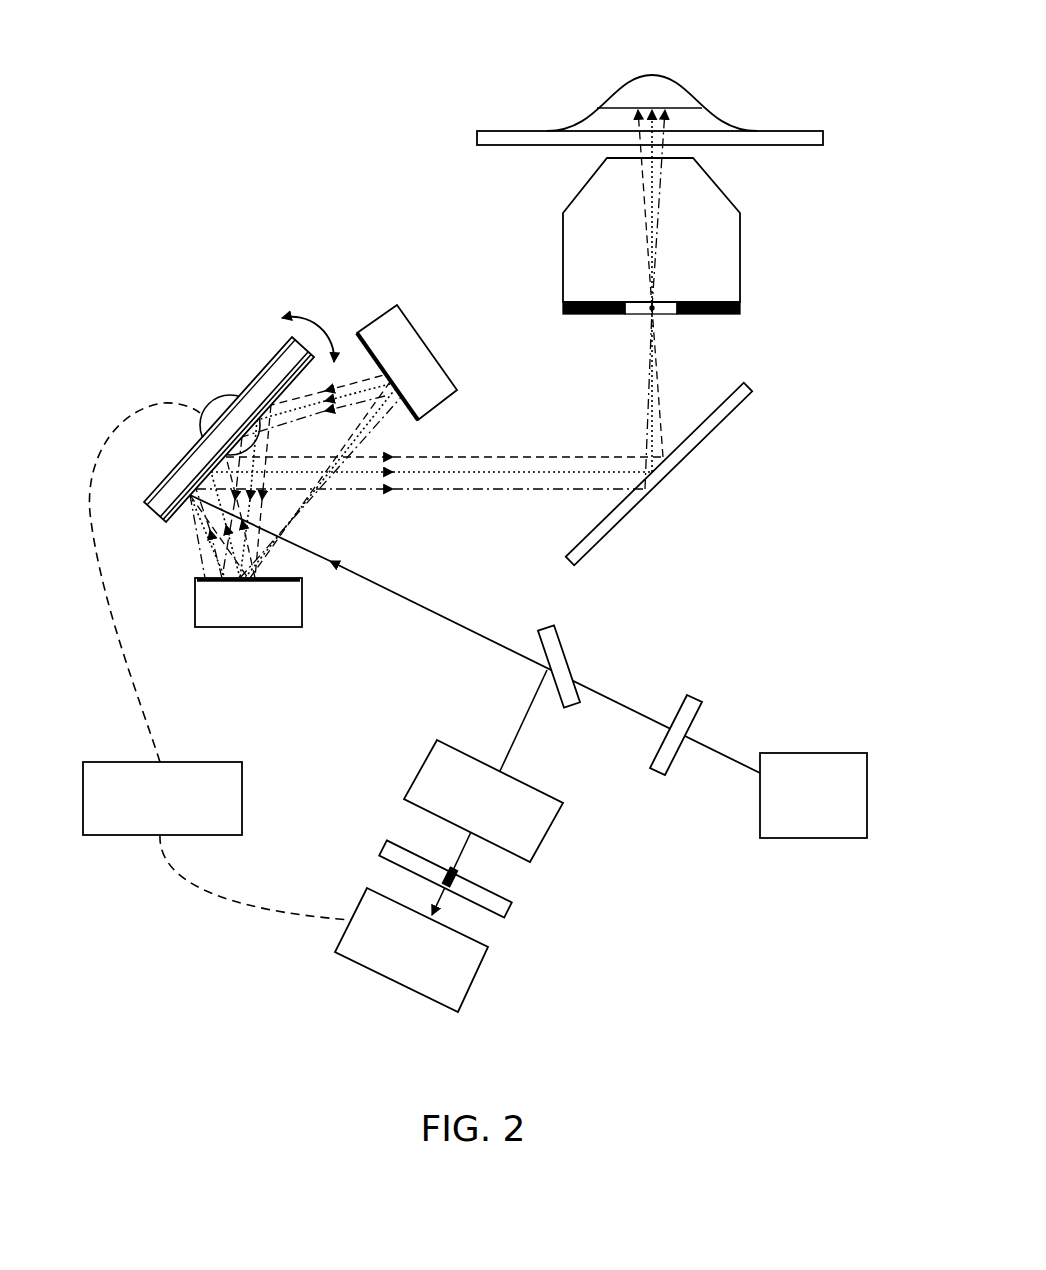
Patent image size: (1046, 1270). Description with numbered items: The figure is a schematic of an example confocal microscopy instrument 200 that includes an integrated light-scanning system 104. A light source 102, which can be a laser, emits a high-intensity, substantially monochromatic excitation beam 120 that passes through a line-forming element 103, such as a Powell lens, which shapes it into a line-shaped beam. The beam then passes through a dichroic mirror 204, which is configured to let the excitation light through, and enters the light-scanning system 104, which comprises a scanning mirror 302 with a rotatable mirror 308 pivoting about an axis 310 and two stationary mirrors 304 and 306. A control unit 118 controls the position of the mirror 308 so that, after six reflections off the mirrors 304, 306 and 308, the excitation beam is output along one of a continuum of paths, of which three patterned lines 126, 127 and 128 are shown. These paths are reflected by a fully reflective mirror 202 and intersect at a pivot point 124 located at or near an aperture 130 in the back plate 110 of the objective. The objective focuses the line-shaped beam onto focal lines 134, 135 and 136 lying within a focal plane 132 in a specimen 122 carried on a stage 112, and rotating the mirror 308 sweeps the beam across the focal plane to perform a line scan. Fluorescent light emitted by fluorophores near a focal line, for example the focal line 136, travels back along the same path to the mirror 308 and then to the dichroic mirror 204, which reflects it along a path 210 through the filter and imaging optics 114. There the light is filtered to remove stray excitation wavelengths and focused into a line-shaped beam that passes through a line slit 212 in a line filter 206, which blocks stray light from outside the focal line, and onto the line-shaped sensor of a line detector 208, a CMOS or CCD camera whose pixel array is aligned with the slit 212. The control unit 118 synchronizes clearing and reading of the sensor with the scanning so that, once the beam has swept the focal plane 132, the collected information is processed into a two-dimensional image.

The confocal microscopy instrument 200 is at (215, 122).
The light-scanning system 104 is at (131, 277).
The scanning mirror 302 is at (239, 397).
The mirror 308 is at (270, 359).
The pivot / rotation axis 310 is at (199, 427).
The stationary mirror 304 is at (440, 405).
The stationary mirror 306 is at (202, 603).
The excitation beam 120 is at (358, 578).
The excitation beam path 126 is at (423, 492).
The excitation beam path 127 is at (532, 470).
The excitation beam path 128 is at (600, 457).
The fully reflective mirror 202 is at (688, 455).
The aperture 130 is at (640, 314).
The pivot point 124 is at (653, 313).
The back plate 110 is at (707, 314).
The stage 112 is at (797, 138).
The specimen 122 is at (588, 123).
The focal plane 132 is at (693, 107).
The focal line 134 is at (637, 108).
The focal line 135 is at (652, 108).
The focal line 136 is at (668, 108).
The path 210 is at (518, 727).
The dichroic mirror 204 is at (572, 703).
The line-forming element 103 is at (687, 719).
The filter and imaging optics 114 is at (548, 833).
The light source 102 is at (813, 830).
The control unit 118 is at (230, 800).
The line slit 212 is at (444, 871).
The line filter 206 is at (505, 918).
The line detector 208 is at (458, 1012).